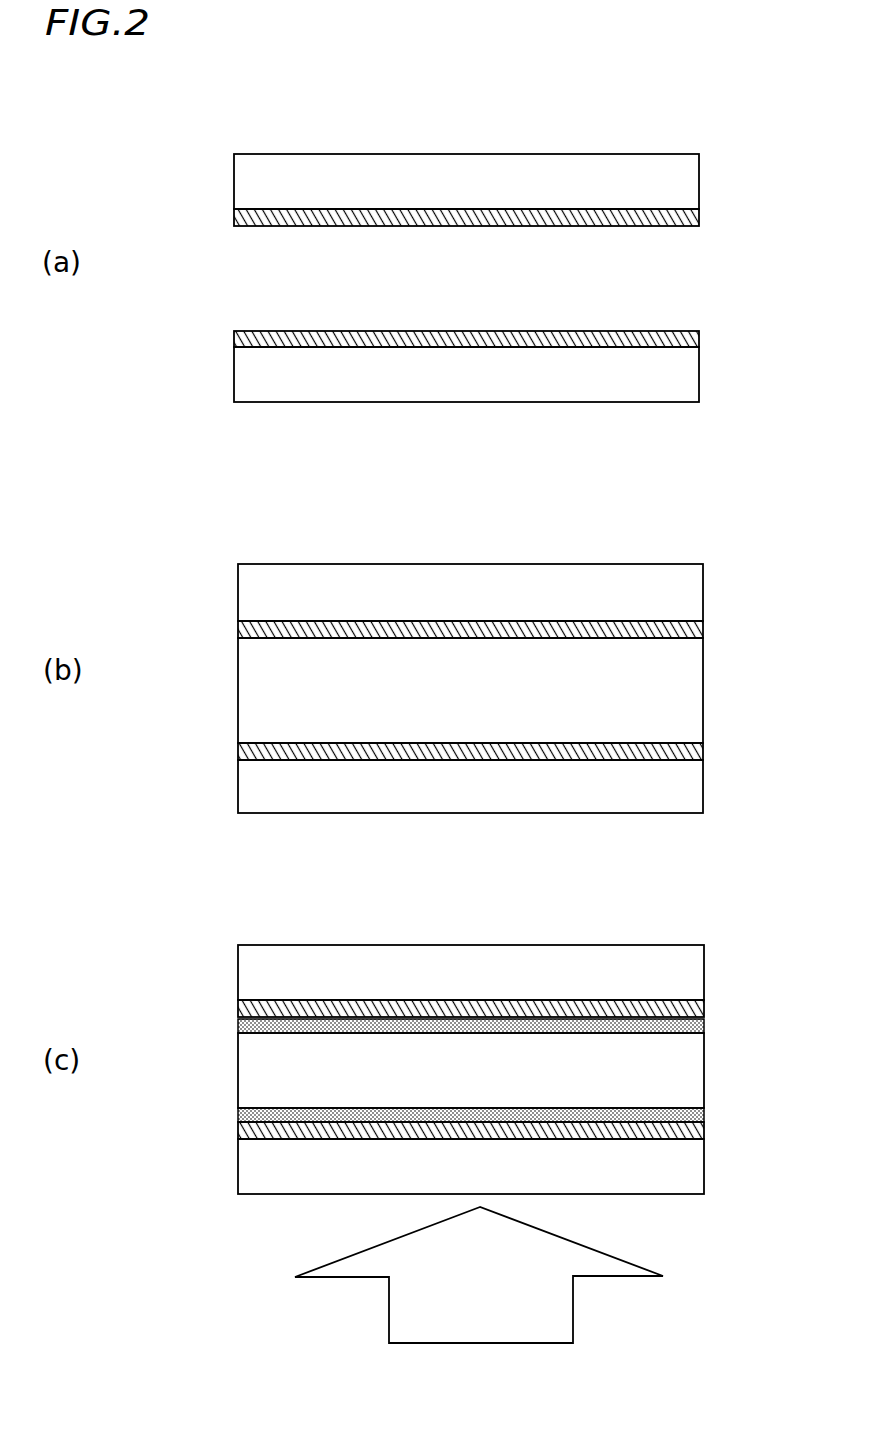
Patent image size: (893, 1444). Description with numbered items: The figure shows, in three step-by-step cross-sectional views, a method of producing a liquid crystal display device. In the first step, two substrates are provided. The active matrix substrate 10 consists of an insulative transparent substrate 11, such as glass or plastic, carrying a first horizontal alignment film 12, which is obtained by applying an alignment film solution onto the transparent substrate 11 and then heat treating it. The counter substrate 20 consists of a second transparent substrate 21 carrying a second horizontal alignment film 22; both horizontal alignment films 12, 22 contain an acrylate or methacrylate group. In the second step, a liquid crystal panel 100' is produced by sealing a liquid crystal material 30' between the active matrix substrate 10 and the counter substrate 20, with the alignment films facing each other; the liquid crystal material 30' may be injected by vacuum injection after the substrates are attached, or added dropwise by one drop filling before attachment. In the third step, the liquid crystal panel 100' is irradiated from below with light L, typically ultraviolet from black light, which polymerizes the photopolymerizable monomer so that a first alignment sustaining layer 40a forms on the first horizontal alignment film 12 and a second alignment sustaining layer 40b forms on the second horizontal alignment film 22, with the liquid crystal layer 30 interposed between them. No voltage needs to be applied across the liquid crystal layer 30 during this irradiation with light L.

The transparent substrate 21 is at (243, 178).
The second horizontal alignment film 22 is at (235, 218).
The counter substrate 20 is at (708, 154).
The first horizontal alignment film 12 is at (236, 340).
The transparent substrate 11 is at (247, 375).
The active matrix substrate 10 is at (710, 331).
The liquid crystal material 30' is at (510, 690).
The liquid crystal layer 30 is at (508, 1070).
The second alignment sustaining layer 40b is at (238, 1030).
The first alignment sustaining layer 40a is at (238, 1115).
The liquid crystal panel 100' is at (743, 695).
The light L is at (555, 1312).